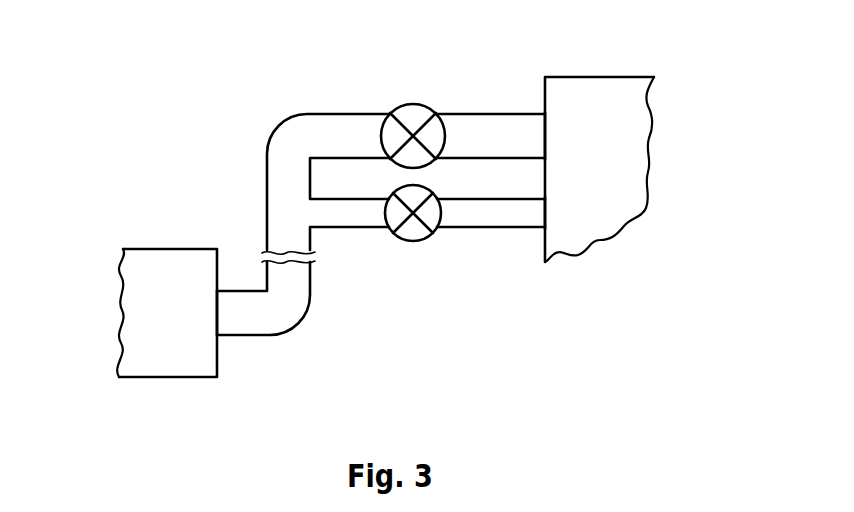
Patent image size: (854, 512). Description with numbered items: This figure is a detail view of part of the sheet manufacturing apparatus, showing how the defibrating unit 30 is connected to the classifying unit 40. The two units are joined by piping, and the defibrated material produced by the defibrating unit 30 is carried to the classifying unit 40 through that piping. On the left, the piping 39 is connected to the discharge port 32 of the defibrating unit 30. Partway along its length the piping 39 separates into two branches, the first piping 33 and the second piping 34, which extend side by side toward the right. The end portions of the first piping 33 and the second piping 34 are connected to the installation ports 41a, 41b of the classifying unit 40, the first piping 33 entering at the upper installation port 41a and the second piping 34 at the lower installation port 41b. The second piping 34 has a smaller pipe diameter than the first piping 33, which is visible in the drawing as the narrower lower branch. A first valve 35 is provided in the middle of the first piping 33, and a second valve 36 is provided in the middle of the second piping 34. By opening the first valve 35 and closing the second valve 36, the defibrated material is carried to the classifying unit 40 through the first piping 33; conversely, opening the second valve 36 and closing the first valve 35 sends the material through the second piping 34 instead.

The defibrating unit 30 is at (125, 320).
The discharge port 32 is at (217, 313).
The first piping 33 is at (492, 122).
The second piping 34 is at (491, 220).
The first valve 35 is at (413, 104).
The second valve 36 is at (414, 242).
The piping 39 is at (278, 200).
The classifying unit 40 is at (648, 172).
The installation port 41a is at (545, 135).
The installation port 41b is at (545, 213).